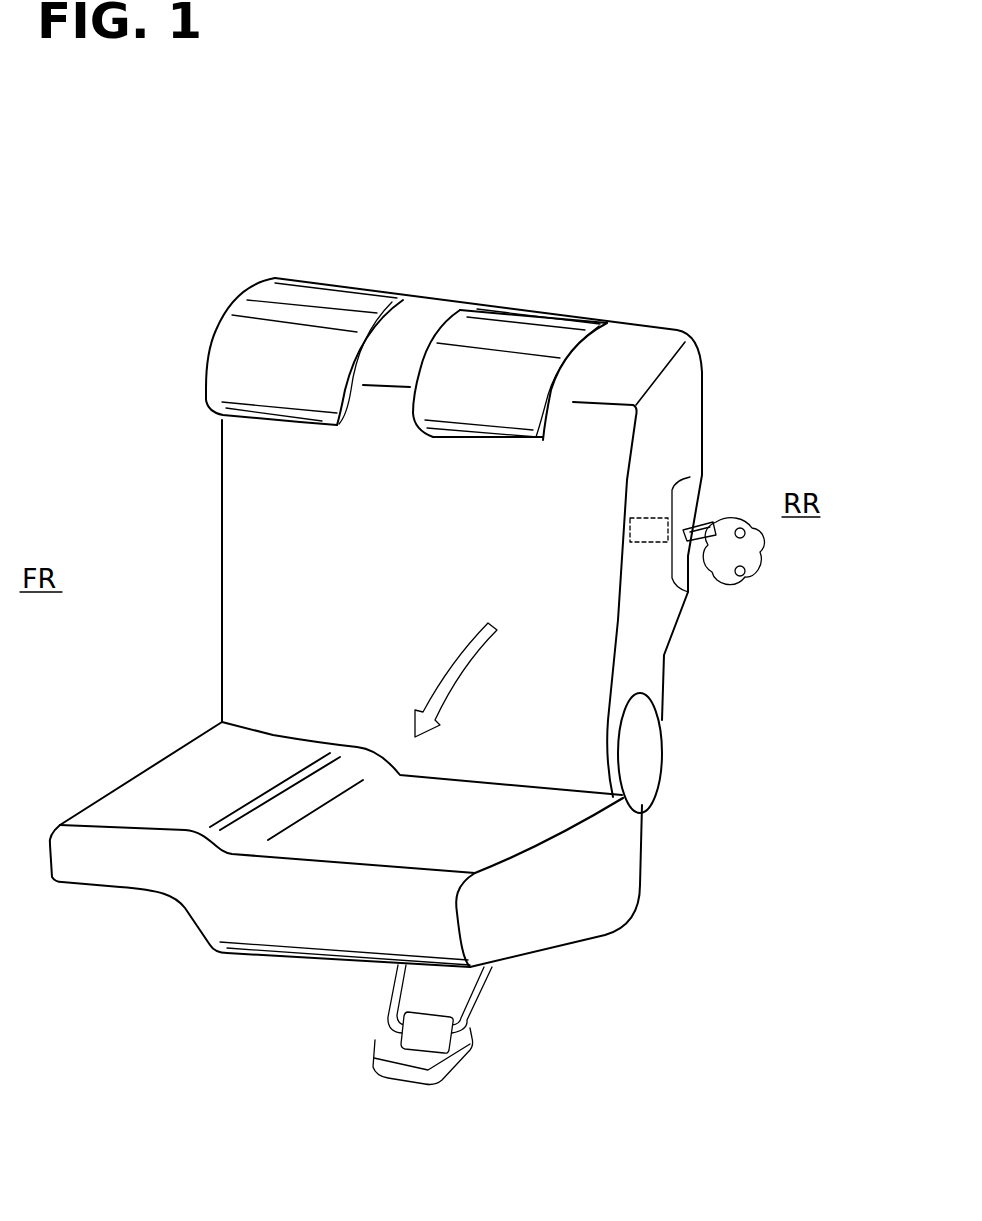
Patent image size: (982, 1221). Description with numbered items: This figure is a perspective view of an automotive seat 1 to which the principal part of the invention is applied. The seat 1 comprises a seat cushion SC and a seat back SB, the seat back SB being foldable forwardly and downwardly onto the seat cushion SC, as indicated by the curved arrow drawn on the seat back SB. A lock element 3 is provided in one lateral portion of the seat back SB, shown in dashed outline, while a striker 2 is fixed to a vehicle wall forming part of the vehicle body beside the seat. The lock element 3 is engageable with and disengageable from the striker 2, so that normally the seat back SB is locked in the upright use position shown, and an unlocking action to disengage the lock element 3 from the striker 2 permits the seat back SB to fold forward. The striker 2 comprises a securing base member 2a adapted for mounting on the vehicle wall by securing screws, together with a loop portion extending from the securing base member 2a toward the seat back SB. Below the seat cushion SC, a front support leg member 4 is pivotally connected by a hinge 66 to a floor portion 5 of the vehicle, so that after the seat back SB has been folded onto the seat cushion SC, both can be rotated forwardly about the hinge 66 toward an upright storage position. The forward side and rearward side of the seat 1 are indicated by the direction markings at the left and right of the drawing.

The automotive seat 1 is at (127, 336).
The striker 2 is at (717, 521).
The securing base member 2a is at (748, 553).
The lock element 3 is at (658, 517).
The front support leg member 4 is at (388, 1007).
The floor portion 5 is at (448, 1065).
The hinge 66 is at (422, 1043).
The seat back SB is at (218, 488).
The seat cushion SC is at (135, 773).